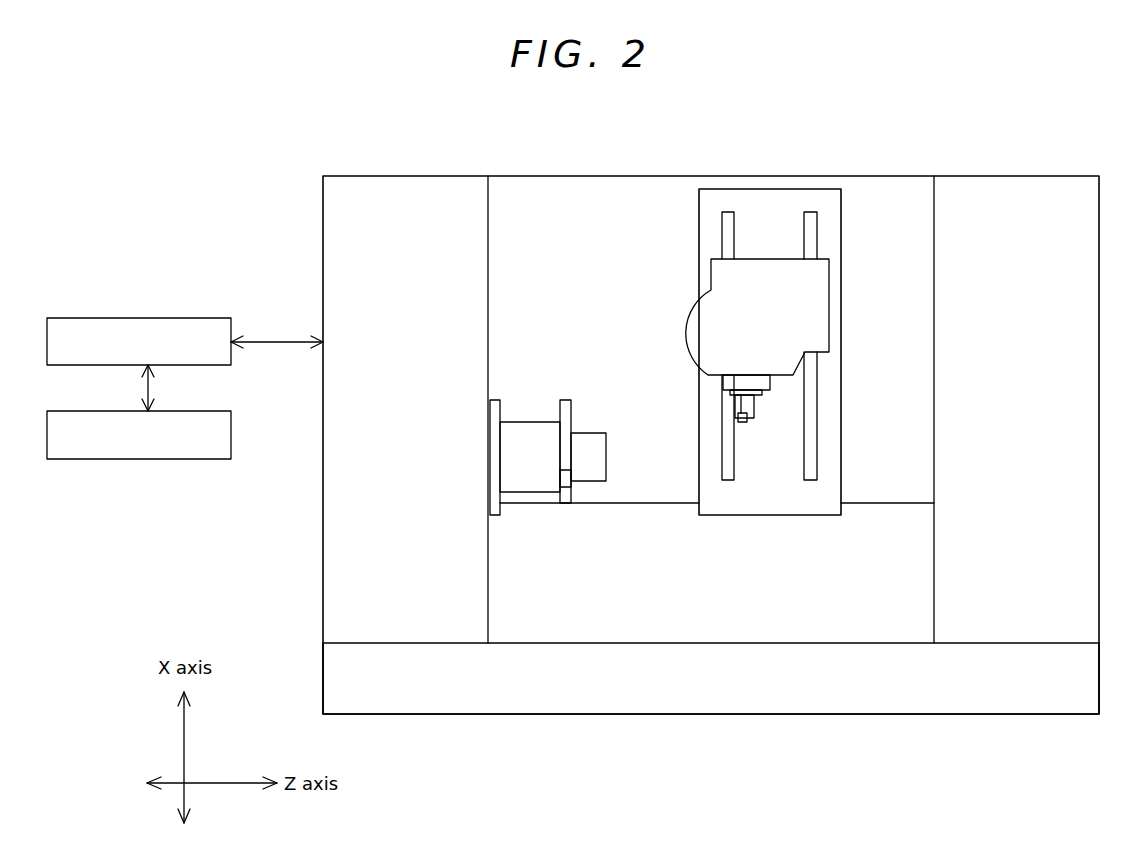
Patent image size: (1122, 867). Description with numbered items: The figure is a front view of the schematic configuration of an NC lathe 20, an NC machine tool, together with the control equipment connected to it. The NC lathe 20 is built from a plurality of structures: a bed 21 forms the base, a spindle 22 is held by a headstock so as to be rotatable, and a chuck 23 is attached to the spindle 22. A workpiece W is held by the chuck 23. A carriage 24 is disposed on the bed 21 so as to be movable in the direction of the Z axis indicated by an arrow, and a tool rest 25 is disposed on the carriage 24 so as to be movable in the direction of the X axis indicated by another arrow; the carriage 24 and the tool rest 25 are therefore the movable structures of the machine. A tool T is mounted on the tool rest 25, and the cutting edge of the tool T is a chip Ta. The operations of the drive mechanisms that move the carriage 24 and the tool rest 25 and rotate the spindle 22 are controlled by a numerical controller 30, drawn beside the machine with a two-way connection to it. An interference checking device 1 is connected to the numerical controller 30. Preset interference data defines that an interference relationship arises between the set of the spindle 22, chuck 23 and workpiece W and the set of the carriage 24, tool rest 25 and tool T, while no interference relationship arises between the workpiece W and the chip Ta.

The NC lathe 20 is at (281, 160).
The bed 21 is at (570, 708).
The spindle 22 is at (495, 517).
The chuck 23 is at (537, 412).
The workpiece W is at (586, 481).
The carriage 24 is at (832, 448).
The tool rest 25 is at (679, 284).
The tool T is at (727, 407).
The chip Ta is at (741, 418).
The numerical controller 30 is at (146, 318).
The interference checking device 1 is at (146, 459).